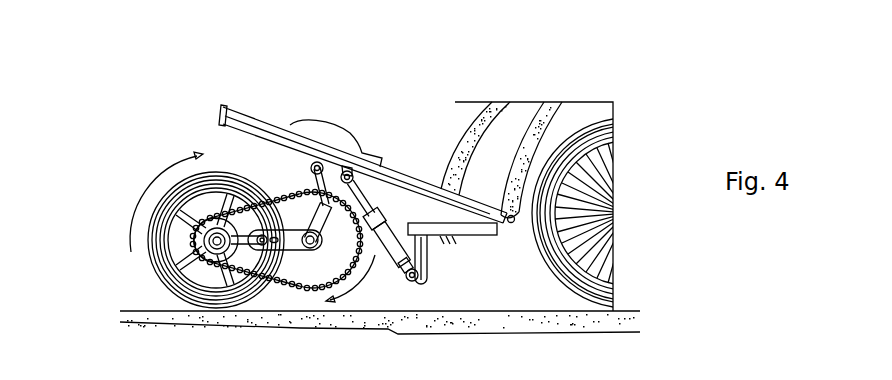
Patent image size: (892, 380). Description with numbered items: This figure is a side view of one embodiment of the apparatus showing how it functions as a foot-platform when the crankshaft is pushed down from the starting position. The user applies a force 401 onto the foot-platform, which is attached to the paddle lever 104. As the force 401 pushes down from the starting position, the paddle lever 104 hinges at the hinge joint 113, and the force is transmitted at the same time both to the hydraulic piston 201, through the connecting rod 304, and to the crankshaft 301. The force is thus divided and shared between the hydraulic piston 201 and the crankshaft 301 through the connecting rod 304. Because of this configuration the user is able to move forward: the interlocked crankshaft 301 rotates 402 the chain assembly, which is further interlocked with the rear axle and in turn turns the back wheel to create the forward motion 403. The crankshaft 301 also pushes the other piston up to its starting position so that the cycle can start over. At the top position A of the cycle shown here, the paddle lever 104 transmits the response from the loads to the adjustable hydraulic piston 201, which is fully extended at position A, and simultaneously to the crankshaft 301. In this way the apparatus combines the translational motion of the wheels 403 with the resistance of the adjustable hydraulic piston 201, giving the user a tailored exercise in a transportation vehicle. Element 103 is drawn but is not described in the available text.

The frame beam 103 is at (222, 108).
The paddle lever 104 is at (430, 195).
The hinge joint 113 is at (511, 222).
The hydraulic piston 201 is at (399, 220).
The crankshaft 301 is at (327, 228).
The connecting rod 304 is at (303, 182).
The force 401 is at (283, 102).
The rotation of the crankshaft 402 is at (362, 280).
The forward motion 403 is at (142, 192).
The top position A is at (636, 126).